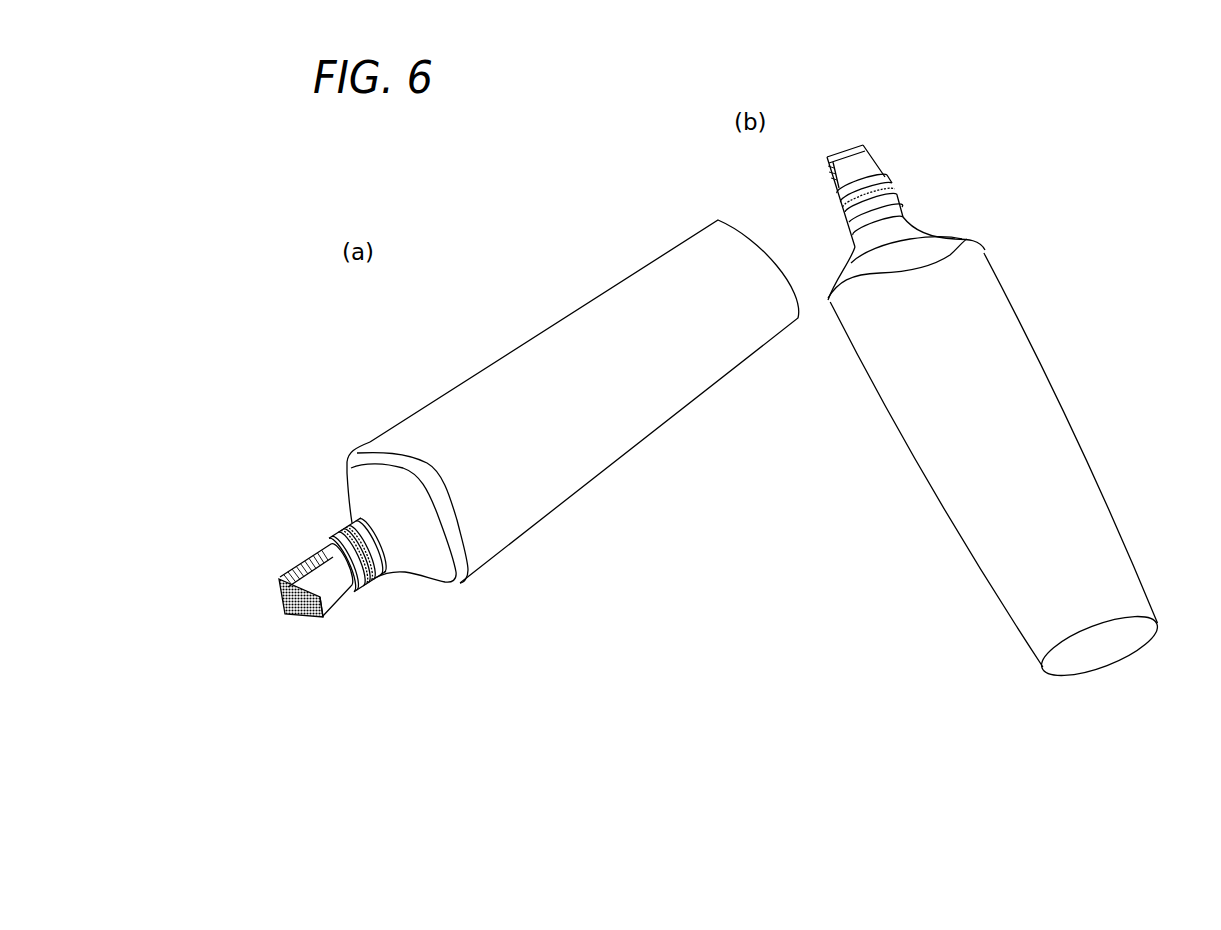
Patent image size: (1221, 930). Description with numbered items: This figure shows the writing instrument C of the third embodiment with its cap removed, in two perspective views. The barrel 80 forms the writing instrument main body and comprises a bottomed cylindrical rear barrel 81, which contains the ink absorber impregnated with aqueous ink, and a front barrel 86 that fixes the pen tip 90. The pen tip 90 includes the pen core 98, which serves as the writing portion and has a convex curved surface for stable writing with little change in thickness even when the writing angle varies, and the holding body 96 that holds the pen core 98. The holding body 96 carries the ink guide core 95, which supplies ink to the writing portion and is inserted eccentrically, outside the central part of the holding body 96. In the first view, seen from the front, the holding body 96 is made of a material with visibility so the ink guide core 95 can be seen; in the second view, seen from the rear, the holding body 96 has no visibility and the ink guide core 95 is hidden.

The barrel 80 is at (721, 403).
The rear barrel 81 is at (603, 474).
The front barrel 86 is at (460, 585).
The pen tip 90 is at (616, 391).
The ink guide core 95 is at (310, 568).
The holding body 96 is at (340, 588).
The pen core 98 is at (291, 617).
The writing instrument C is at (507, 344).